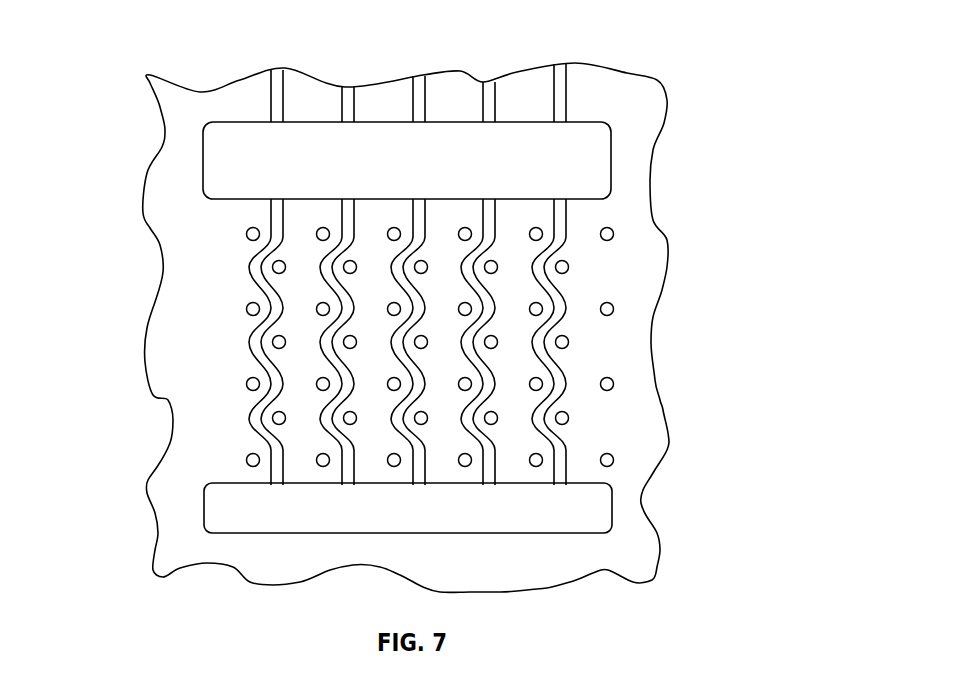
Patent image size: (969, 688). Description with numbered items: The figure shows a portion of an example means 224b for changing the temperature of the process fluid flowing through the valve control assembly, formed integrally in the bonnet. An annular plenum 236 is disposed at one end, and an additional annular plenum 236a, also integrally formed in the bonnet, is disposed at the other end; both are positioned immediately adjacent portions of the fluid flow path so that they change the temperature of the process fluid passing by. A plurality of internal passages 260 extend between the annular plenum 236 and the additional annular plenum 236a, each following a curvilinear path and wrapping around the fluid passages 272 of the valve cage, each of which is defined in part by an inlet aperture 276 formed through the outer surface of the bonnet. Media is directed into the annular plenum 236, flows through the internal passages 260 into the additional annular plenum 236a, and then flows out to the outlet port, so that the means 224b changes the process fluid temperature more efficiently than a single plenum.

The means for changing the temperature of the process fluid 224b is at (684, 26).
The annular plenum 236 is at (582, 130).
The additional annular plenum 236a is at (596, 517).
The internal passage 260 is at (249, 267).
The fluid passage 272 is at (241, 459).
The inlet aperture 276 is at (615, 383).